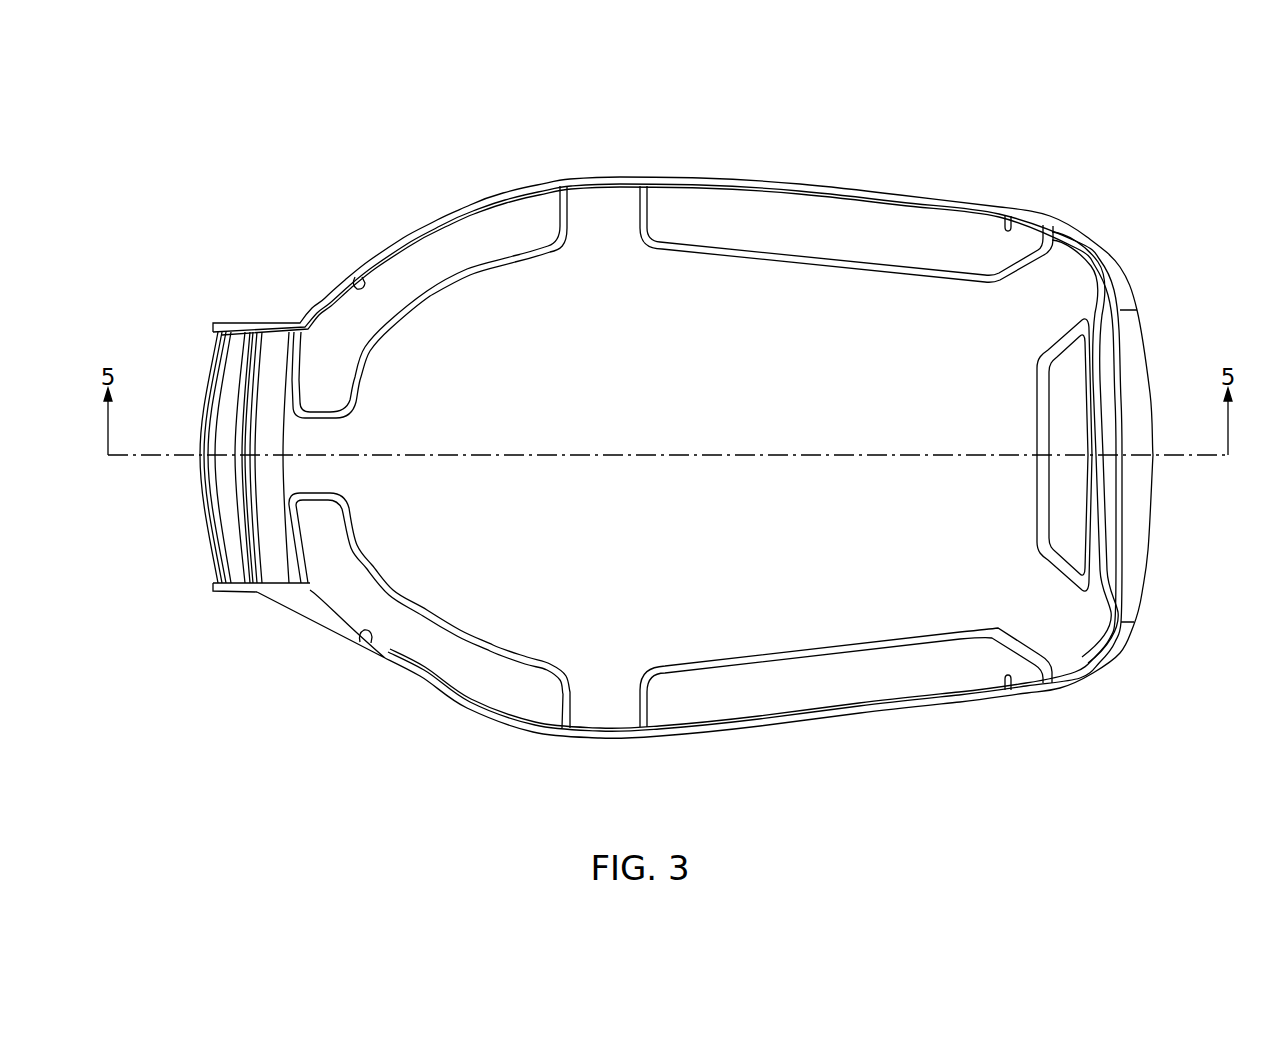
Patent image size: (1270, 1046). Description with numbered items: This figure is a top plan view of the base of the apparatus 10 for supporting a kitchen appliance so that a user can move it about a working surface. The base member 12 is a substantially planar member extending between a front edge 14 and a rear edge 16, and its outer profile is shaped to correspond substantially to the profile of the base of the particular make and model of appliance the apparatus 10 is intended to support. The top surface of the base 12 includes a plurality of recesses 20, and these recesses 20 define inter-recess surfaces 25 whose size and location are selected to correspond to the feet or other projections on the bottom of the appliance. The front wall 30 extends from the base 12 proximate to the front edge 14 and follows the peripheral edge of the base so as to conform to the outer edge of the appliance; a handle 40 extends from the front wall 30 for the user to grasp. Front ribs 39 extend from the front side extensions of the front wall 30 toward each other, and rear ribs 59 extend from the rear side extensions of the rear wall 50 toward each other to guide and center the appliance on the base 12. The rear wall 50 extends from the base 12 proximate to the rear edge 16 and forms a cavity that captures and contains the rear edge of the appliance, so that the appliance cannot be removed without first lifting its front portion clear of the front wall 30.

The apparatus 10 is at (951, 155).
The base member 12 is at (708, 344).
The front edge 14 is at (288, 369).
The rear edge 16 is at (1148, 353).
The recesses 20 is at (476, 240).
The inter-recess surfaces 25 is at (603, 201).
The front wall 30 is at (308, 607).
The front ribs 39 is at (358, 277).
The handle 40 is at (201, 505).
The rear wall 50 is at (1121, 333).
The rear ribs 59 is at (1009, 221).